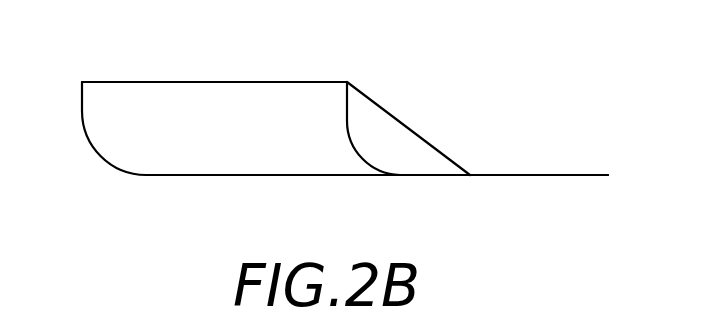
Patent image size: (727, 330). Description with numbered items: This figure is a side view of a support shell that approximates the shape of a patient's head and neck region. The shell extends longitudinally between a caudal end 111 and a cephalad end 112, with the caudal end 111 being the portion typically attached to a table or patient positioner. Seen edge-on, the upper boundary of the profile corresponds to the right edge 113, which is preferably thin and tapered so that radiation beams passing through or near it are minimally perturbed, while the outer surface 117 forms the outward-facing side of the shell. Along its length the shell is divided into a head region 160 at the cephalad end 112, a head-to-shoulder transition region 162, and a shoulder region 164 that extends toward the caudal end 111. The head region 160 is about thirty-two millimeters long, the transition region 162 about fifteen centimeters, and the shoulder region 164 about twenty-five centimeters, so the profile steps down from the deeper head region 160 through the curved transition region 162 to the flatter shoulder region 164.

The caudal end 111 is at (603, 175).
The cephalad end 112 is at (82, 86).
The right edge 113 is at (188, 97).
The outer surface 117 is at (296, 97).
The head region 160 is at (192, 163).
The head-to-shoulder transition region 162 is at (418, 163).
The shoulder region 164 is at (547, 175).